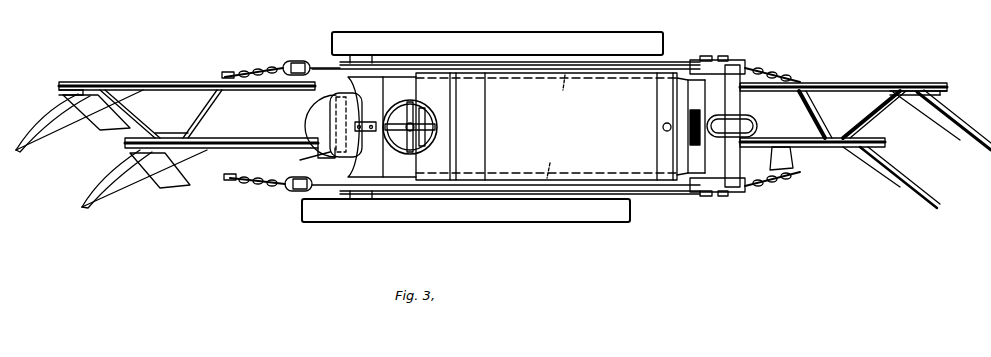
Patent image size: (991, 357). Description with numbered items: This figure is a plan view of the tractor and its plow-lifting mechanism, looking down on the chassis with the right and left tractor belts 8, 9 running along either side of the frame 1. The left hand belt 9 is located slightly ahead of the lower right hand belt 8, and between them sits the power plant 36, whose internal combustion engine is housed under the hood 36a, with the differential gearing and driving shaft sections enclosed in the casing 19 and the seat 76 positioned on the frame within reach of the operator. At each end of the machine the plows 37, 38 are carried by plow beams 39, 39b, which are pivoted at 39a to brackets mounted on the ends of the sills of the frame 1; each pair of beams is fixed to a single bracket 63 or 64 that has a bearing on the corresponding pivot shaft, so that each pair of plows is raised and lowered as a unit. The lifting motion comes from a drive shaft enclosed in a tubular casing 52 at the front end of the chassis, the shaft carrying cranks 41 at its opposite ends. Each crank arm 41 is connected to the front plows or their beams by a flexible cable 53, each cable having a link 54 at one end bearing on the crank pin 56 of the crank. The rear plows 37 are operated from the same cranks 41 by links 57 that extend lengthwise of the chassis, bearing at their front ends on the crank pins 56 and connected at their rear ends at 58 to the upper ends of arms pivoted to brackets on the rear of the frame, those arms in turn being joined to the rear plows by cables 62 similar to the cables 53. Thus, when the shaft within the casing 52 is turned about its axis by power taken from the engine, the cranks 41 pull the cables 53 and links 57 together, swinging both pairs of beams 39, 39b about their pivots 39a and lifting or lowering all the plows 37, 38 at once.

The frame 1 is at (561, 126).
The right tractor belt 8 is at (466, 206).
The left tractor belt 9 is at (497, 47).
The casing 19 is at (368, 92).
The power plant 36 is at (420, 190).
The hood 36a is at (546, 126).
The plows 37 is at (58, 118).
The plows 38 is at (938, 108).
The plow beams 39 is at (177, 84).
The pivot 39a is at (680, 148).
The plow beams 39b is at (831, 85).
The cranks 41 is at (700, 62).
The tubular casing 52 is at (735, 157).
The cables 53 is at (748, 66).
The link 54 is at (724, 57).
The crank pin 56 is at (706, 57).
The links 57 is at (553, 62).
The connection 58 is at (296, 61).
The cables 62 is at (258, 70).
The bracket 63 is at (307, 97).
The bracket 64 is at (710, 106).
The seat 76 is at (352, 116).